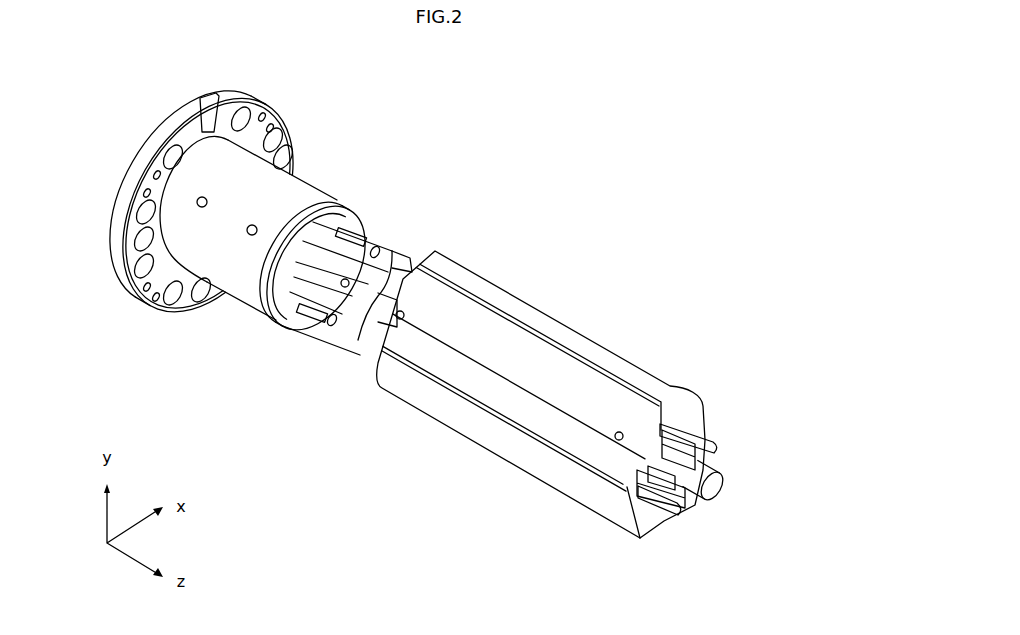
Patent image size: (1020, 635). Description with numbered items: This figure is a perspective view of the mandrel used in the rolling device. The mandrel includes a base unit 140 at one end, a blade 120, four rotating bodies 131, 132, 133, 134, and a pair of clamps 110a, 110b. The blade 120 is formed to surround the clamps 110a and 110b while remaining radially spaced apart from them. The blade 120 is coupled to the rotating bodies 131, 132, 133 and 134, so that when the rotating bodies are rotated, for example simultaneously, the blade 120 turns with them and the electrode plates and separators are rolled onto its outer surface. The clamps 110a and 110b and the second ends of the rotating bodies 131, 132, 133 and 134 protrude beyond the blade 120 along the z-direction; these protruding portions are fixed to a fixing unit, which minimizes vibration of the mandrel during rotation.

The blade 120 is at (542, 307).
The base unit 140 is at (300, 190).
The rotating body 131 is at (713, 446).
The rotating body 132 is at (718, 489).
The rotating body 133 is at (657, 510).
The rotating body 134 is at (665, 470).
The clamp 110a is at (690, 456).
The clamp 110b is at (686, 505).